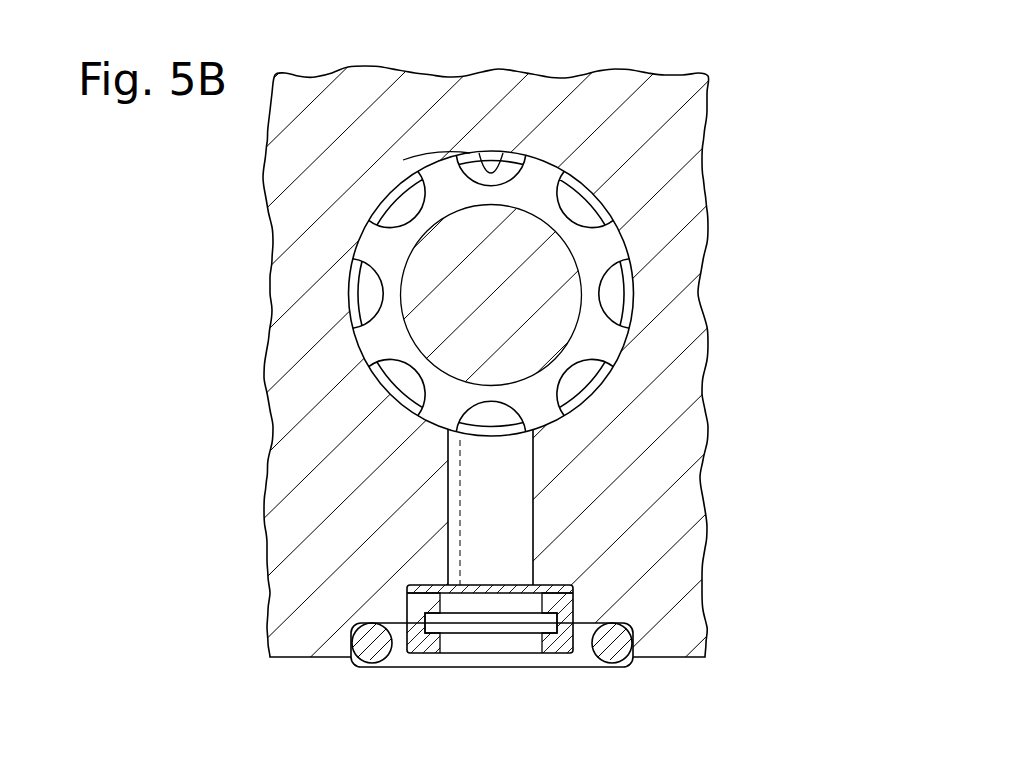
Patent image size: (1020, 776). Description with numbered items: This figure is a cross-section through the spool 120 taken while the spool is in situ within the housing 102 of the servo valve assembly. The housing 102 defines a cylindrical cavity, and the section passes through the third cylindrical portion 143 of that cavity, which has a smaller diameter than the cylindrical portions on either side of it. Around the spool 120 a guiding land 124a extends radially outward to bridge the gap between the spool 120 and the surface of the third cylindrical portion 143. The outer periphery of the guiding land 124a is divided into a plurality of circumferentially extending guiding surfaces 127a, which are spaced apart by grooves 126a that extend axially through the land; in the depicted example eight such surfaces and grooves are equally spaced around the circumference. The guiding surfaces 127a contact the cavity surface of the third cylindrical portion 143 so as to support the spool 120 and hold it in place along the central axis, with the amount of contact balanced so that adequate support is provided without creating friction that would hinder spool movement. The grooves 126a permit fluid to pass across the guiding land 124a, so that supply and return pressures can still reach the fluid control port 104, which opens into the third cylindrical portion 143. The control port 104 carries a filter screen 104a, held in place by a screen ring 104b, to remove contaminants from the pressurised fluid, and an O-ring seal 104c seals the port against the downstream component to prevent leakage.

The housing 102 is at (640, 480).
The spool 120 is at (428, 295).
The guiding land 124a is at (542, 173).
The groove 126a is at (570, 208).
The guiding surface 127a is at (433, 161).
The third cylindrical portion 143 is at (479, 153).
The fluid control port 104 is at (515, 557).
The filter screen 104a is at (466, 592).
The screen ring 104b is at (423, 642).
The O-ring seal 104c is at (612, 643).